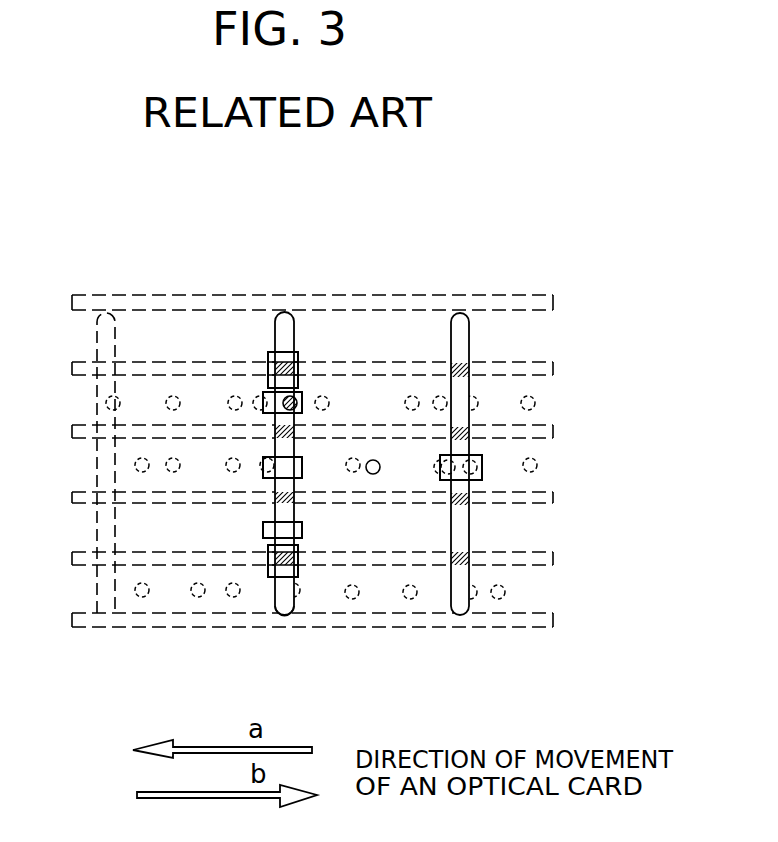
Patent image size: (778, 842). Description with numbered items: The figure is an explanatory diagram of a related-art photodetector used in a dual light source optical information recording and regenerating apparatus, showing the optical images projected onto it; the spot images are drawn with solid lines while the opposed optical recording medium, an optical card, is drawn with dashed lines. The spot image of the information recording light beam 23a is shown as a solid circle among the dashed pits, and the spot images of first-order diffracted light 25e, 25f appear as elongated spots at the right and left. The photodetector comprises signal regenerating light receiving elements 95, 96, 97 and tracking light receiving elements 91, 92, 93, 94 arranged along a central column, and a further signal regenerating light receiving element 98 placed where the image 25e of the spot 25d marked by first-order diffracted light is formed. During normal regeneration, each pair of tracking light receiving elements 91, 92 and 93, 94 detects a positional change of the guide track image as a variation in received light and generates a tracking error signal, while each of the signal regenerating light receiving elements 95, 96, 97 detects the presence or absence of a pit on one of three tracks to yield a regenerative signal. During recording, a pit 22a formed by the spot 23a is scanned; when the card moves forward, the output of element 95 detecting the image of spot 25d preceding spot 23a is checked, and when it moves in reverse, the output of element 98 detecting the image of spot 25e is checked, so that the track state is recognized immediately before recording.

The tracking light receiving element 91 is at (273, 357).
The tracking light receiving element 92 is at (296, 378).
The tracking light receiving element 93 is at (298, 551).
The tracking light receiving element 94 is at (297, 577).
The signal regenerating light receiving element 95 is at (267, 480).
The signal regenerating light receiving element 96 is at (263, 397).
The signal regenerating light receiving element 97 is at (303, 532).
The signal regenerating light receiving element 98 is at (482, 465).
The pit 22a is at (356, 460).
The spot image of information recording light beam 23a is at (380, 472).
The spot 25d is at (273, 598).
The spot image of first-order diffracted light 25e is at (472, 608).
The spot image of first-order diffracted light 25f is at (97, 597).